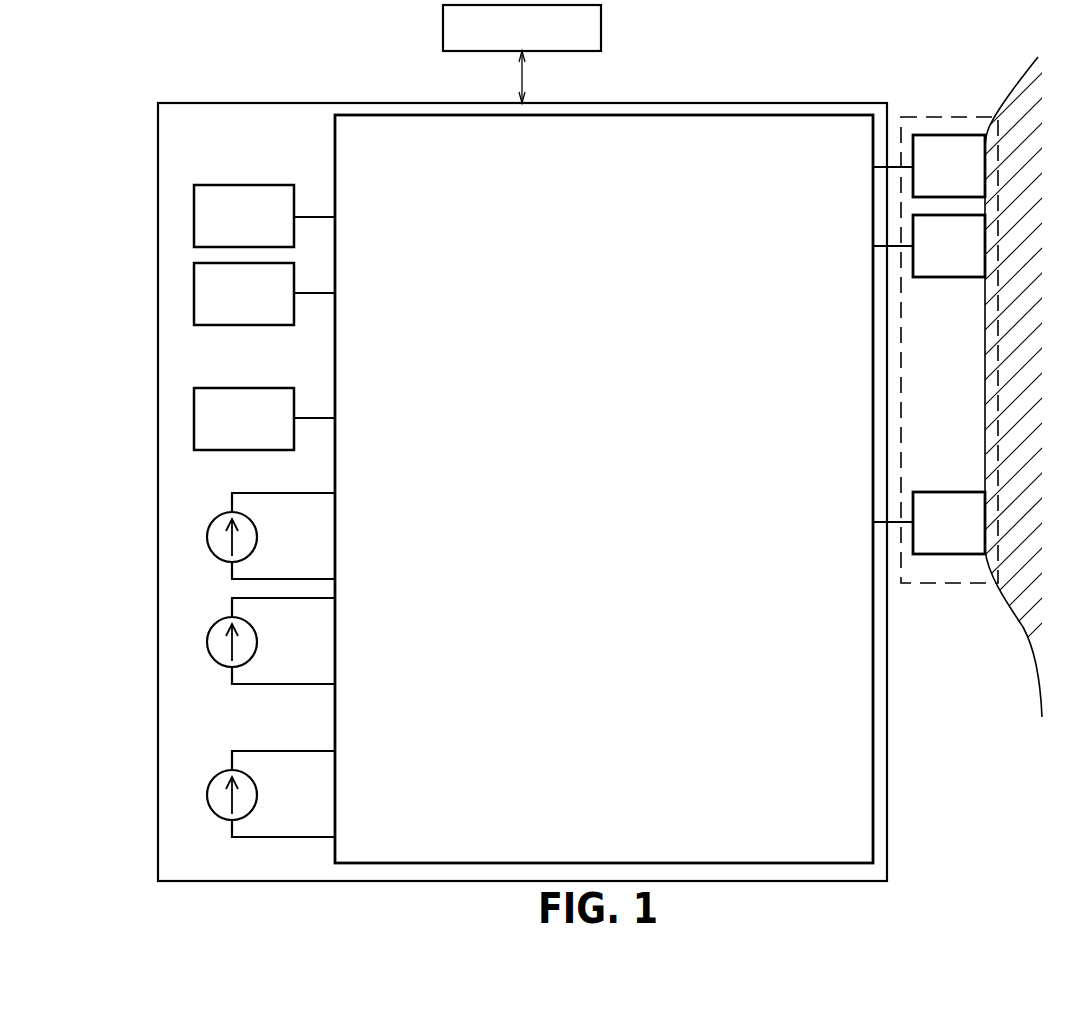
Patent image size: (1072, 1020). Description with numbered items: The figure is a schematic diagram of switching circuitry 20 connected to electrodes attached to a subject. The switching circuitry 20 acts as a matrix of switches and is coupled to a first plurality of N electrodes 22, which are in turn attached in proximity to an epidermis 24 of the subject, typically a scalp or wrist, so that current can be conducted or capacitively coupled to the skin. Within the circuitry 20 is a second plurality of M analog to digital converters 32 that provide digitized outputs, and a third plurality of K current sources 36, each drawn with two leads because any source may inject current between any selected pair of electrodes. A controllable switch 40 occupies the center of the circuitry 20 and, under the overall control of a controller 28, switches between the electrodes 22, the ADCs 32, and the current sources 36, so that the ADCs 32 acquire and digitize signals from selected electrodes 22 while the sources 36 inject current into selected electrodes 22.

The switching circuitry 20 is at (218, 881).
The electrodes 22 is at (960, 583).
The epidermis 24 is at (1025, 630).
The controller 28 is at (601, 25).
The analog to digital converters 32 is at (147, 185).
The current sources 36 is at (147, 497).
The controllable switch 40 is at (362, 863).